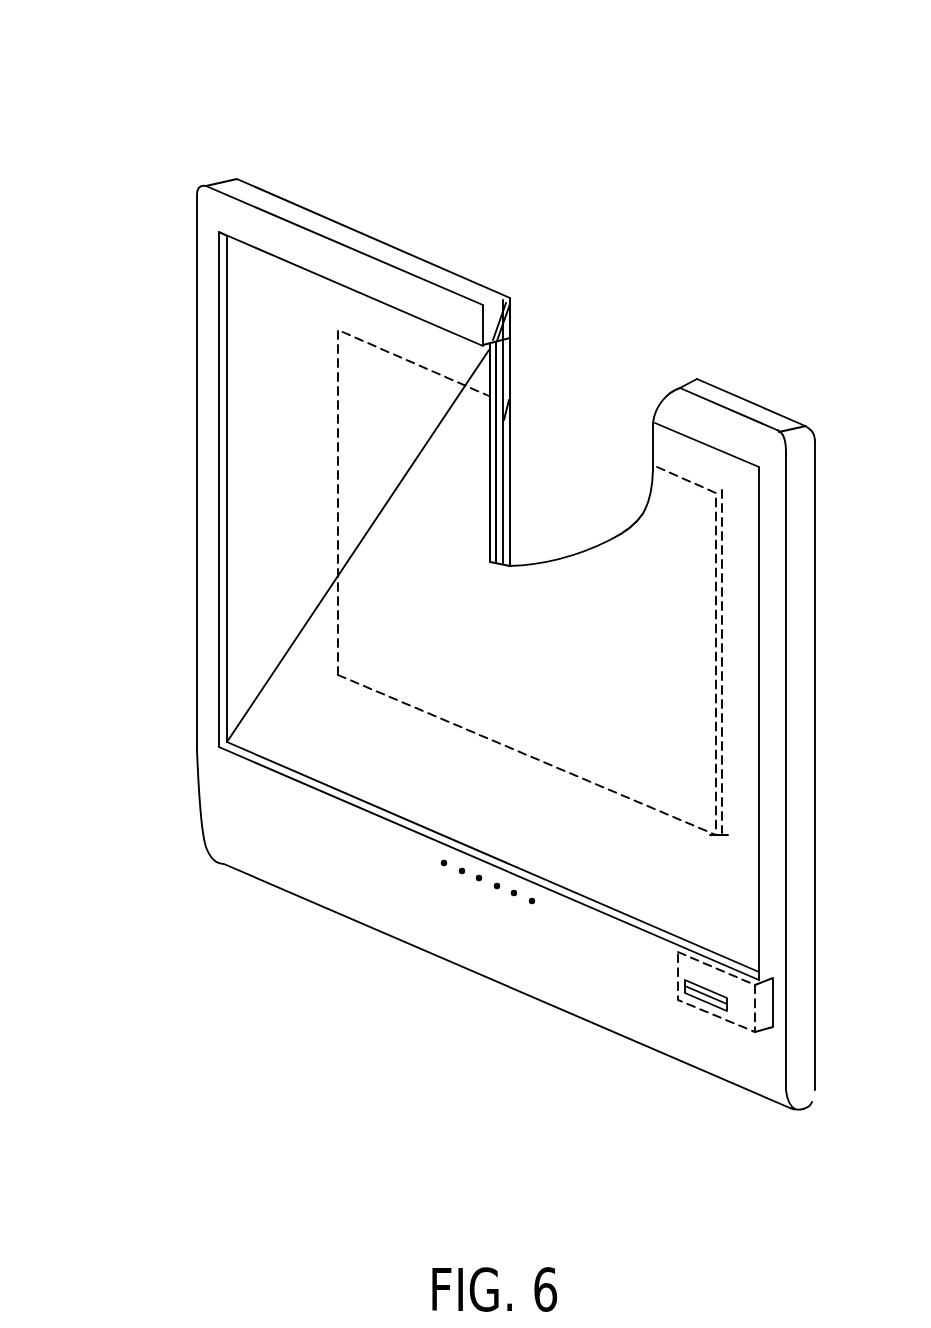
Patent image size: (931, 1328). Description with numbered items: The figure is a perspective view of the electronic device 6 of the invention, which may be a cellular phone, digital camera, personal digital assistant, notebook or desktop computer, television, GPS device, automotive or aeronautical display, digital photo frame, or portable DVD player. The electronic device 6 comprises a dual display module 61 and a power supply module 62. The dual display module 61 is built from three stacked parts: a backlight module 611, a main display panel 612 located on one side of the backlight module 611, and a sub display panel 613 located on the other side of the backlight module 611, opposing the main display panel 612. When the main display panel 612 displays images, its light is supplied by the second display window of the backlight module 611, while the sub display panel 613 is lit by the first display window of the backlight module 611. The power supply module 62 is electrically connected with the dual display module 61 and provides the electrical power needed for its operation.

The electronic device 6 is at (366, 178).
The dual display module 61 is at (392, 370).
The backlight module 611 is at (497, 432).
The main display panel 612 is at (489, 474).
The sub display panel 613 is at (512, 504).
The power supply module 62 is at (733, 1027).